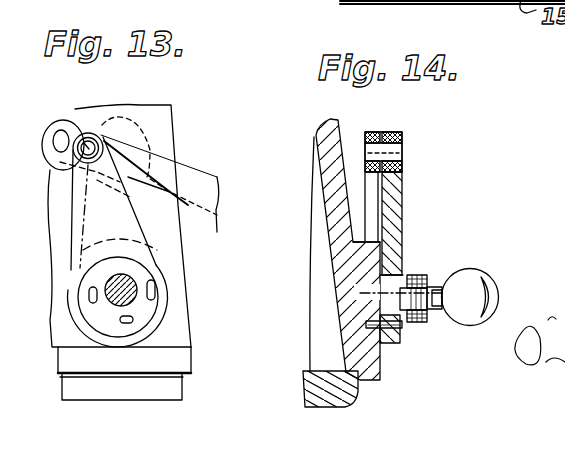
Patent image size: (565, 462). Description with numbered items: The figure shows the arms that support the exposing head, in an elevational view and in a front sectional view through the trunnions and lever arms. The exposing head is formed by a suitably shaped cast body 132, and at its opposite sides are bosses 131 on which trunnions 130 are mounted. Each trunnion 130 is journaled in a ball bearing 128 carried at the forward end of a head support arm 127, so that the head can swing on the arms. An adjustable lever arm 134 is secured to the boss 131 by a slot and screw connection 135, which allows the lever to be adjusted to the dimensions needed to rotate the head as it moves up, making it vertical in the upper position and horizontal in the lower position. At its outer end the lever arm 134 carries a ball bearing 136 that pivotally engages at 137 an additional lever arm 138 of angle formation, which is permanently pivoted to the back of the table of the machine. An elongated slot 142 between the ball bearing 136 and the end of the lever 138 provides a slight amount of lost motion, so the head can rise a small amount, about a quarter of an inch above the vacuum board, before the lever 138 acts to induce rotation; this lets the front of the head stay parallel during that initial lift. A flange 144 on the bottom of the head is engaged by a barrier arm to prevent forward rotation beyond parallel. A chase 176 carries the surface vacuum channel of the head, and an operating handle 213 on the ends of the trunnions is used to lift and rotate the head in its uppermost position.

In FIG. 14, the head support arm 127 is at (414, 275).
In FIG. 14, the ball bearing 128 is at (430, 318).
In FIG. 14, the trunnion 130 is at (404, 322).
In FIG. 13, the boss 131 is at (160, 323).
In FIG. 14, the boss 131 is at (357, 257).
In FIG. 14, the cast body 132 is at (335, 172).
In FIG. 13, the adjustable lever arm 134 is at (122, 225).
In FIG. 14, the adjustable lever arm 134 is at (402, 205).
In FIG. 13, the slot and screw connection 135 is at (152, 290).
In FIG. 14, the slot and screw connection 135 is at (392, 350).
In FIG. 13, the ball bearing 136 is at (94, 182).
In FIG. 14, the ball bearing 136 is at (397, 130).
In FIG. 13, the pivot 137 is at (88, 148).
In FIG. 14, the pivot 137 is at (403, 153).
In FIG. 13, the lever arm 138 is at (161, 165).
In FIG. 14, the lever arm 138 is at (375, 118).
In FIG. 13, the elongated slot 142 is at (53, 132).
In FIG. 13, the flange 144 is at (173, 363).
In FIG. 13, the chase 176 is at (163, 390).
In FIG. 14, the chase 176 is at (306, 383).
In FIG. 14, the operating handle 213 is at (468, 297).